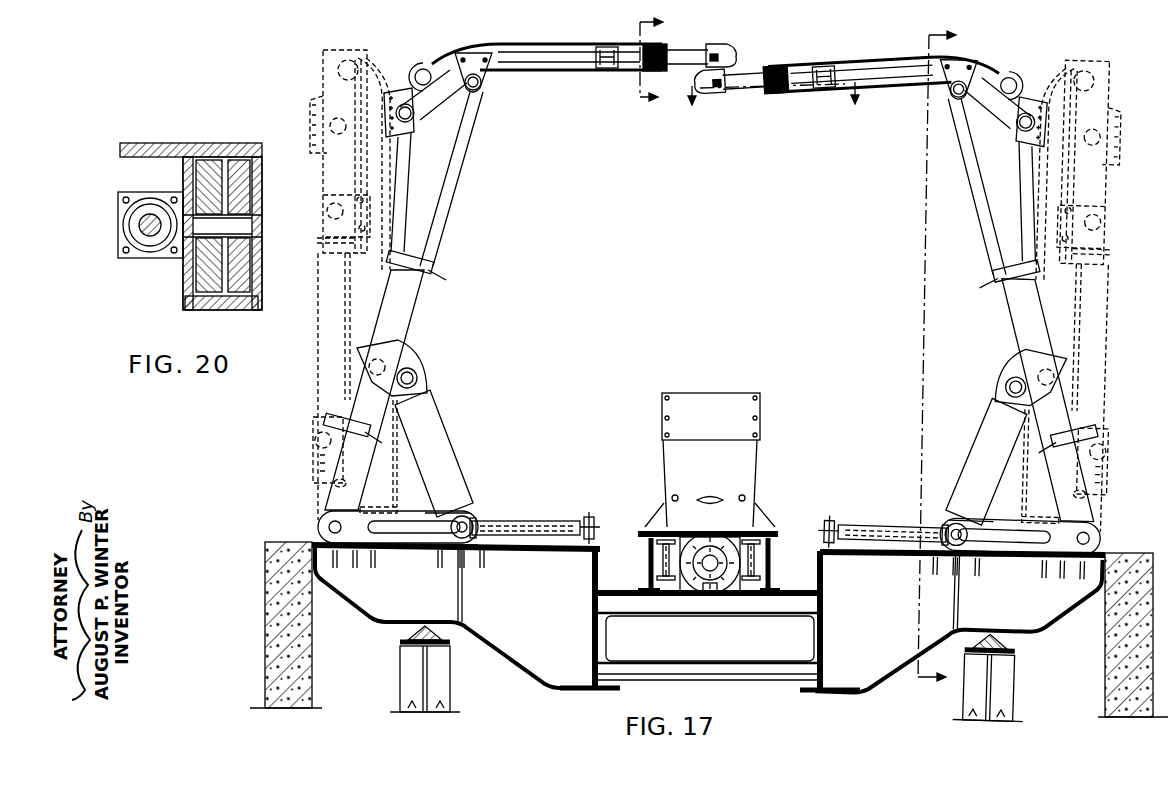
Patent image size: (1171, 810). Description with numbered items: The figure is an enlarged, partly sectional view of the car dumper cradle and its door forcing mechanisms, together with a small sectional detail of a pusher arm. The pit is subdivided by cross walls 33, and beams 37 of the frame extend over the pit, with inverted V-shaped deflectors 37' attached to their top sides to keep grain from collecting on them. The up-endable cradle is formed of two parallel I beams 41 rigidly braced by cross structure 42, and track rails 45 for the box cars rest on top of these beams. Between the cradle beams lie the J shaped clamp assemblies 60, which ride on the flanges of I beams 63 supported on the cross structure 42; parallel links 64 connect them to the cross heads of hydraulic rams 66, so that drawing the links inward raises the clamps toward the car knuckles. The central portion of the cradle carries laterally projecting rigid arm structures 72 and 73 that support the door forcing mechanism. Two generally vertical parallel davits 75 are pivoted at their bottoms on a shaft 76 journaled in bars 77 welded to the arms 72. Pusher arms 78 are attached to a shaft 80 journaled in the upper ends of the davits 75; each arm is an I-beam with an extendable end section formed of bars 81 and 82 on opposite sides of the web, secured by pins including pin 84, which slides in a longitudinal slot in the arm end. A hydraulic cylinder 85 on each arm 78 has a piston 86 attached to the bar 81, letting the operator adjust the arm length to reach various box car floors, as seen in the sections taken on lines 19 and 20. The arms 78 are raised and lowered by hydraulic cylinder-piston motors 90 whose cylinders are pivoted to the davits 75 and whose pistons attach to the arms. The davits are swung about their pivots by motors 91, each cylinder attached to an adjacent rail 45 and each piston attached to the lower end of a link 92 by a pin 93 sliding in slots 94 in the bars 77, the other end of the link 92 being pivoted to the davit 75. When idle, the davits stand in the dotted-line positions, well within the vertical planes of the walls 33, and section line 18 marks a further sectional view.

In FIG. 17, the section line 18- 18 is at (949, 362).
In FIG. 17, the section line 19— 19 is at (775, 103).
In FIG. 17, the section line 20— 20 is at (665, 60).
In FIG. 17, the cross walls 33 is at (268, 665).
In FIG. 17, the beams 37 is at (720, 682).
In FIG. 17, the inverted V-shaped deflectors 37' is at (703, 639).
In FIG. 17, the I beams 41 is at (593, 648).
In FIG. 17, the cross structure 42 is at (757, 644).
In FIG. 17, the track rails 45 is at (597, 517).
In FIG. 17, the J shaped assemblies 60 is at (750, 462).
In FIG. 17, the I beams 63 is at (650, 553).
In FIG. 17, the parallel links 64 is at (660, 566).
In FIG. 17, the hydraulic rams 66 is at (713, 540).
In FIG. 17, the arm structures 72 is at (868, 672).
In FIG. 17, the arm structures 73 is at (507, 632).
In FIG. 17, the davits 75 is at (413, 202).
In FIG. 17, the shaft 76 is at (328, 522).
In FIG. 17, the bars 77 is at (422, 515).
In FIG. 20, the pusher arms 78 is at (225, 259).
In FIG. 17, the pusher arms 78 is at (560, 66).
In FIG. 17, the shaft 80 is at (416, 70).
In FIG. 20, the bar 81 is at (197, 271).
In FIG. 20, the bar 82 is at (243, 276).
In FIG. 20, the pin 84 is at (248, 223).
In FIG. 20, the hydraulic cylinder 85 is at (160, 200).
In FIG. 20, the piston 86 is at (139, 228).
In FIG. 17, the hydraulic cylinder-piston motors 90 is at (383, 330).
In FIG. 17, the hydraulic cylinder-piston motors 91 is at (548, 516).
In FIG. 17, the link 92 is at (433, 420).
In FIG. 17, the pin 93 is at (470, 518).
In FIG. 17, the slots 94 is at (427, 535).